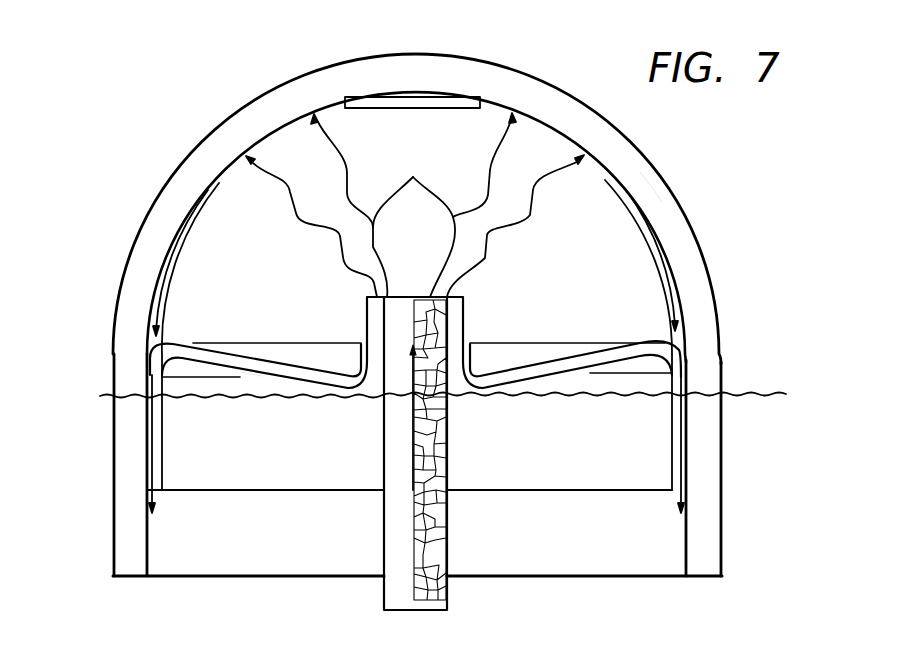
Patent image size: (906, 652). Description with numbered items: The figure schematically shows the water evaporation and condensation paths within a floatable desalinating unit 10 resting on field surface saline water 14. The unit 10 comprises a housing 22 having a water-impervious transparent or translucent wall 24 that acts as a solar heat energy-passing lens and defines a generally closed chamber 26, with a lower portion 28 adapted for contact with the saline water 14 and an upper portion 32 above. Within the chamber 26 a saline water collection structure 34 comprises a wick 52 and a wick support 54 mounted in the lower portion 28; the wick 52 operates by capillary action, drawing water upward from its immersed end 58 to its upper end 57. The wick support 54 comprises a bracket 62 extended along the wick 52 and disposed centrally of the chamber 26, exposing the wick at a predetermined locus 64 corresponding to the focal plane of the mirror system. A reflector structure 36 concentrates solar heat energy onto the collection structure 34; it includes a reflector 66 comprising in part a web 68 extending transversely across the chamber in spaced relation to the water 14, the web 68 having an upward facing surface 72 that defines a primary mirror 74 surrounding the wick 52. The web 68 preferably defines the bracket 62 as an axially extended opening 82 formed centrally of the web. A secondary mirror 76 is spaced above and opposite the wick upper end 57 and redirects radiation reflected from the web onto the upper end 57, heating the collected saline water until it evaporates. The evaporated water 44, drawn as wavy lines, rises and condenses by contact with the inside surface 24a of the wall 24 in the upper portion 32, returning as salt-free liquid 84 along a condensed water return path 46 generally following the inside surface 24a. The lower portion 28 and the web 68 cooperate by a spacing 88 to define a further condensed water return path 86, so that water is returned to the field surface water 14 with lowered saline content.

The unit 10 is at (125, 190).
The saline water 14 is at (637, 453).
The housing 22 is at (727, 280).
The wall 24 is at (253, 108).
The inside surface of wall 24a is at (620, 212).
The chamber 26 is at (610, 236).
The lower portion 28 is at (116, 537).
The upper portion 32 is at (118, 292).
The saline water collection structure 34 is at (369, 423).
The reflector structure 36 is at (182, 283).
The evaporated water 44 is at (413, 178).
The condensed water return path 46 is at (178, 245).
The wick 52 is at (450, 428).
The wick support 54 is at (367, 316).
The upper end of wick 57 is at (432, 294).
The wick immersed end 58 is at (387, 463).
The bracket 62 is at (457, 323).
The predetermined locus 64 is at (372, 283).
The reflector 66 is at (307, 367).
The web 68 is at (263, 373).
The upward facing surface 72 is at (548, 365).
The primary mirror 74 is at (590, 348).
The secondary mirror 76 is at (412, 97).
The axially extended opening 82 is at (447, 293).
The salt-free liquid 84 is at (655, 262).
The condensed water return path 86 is at (677, 440).
The spacing 88 is at (683, 414).